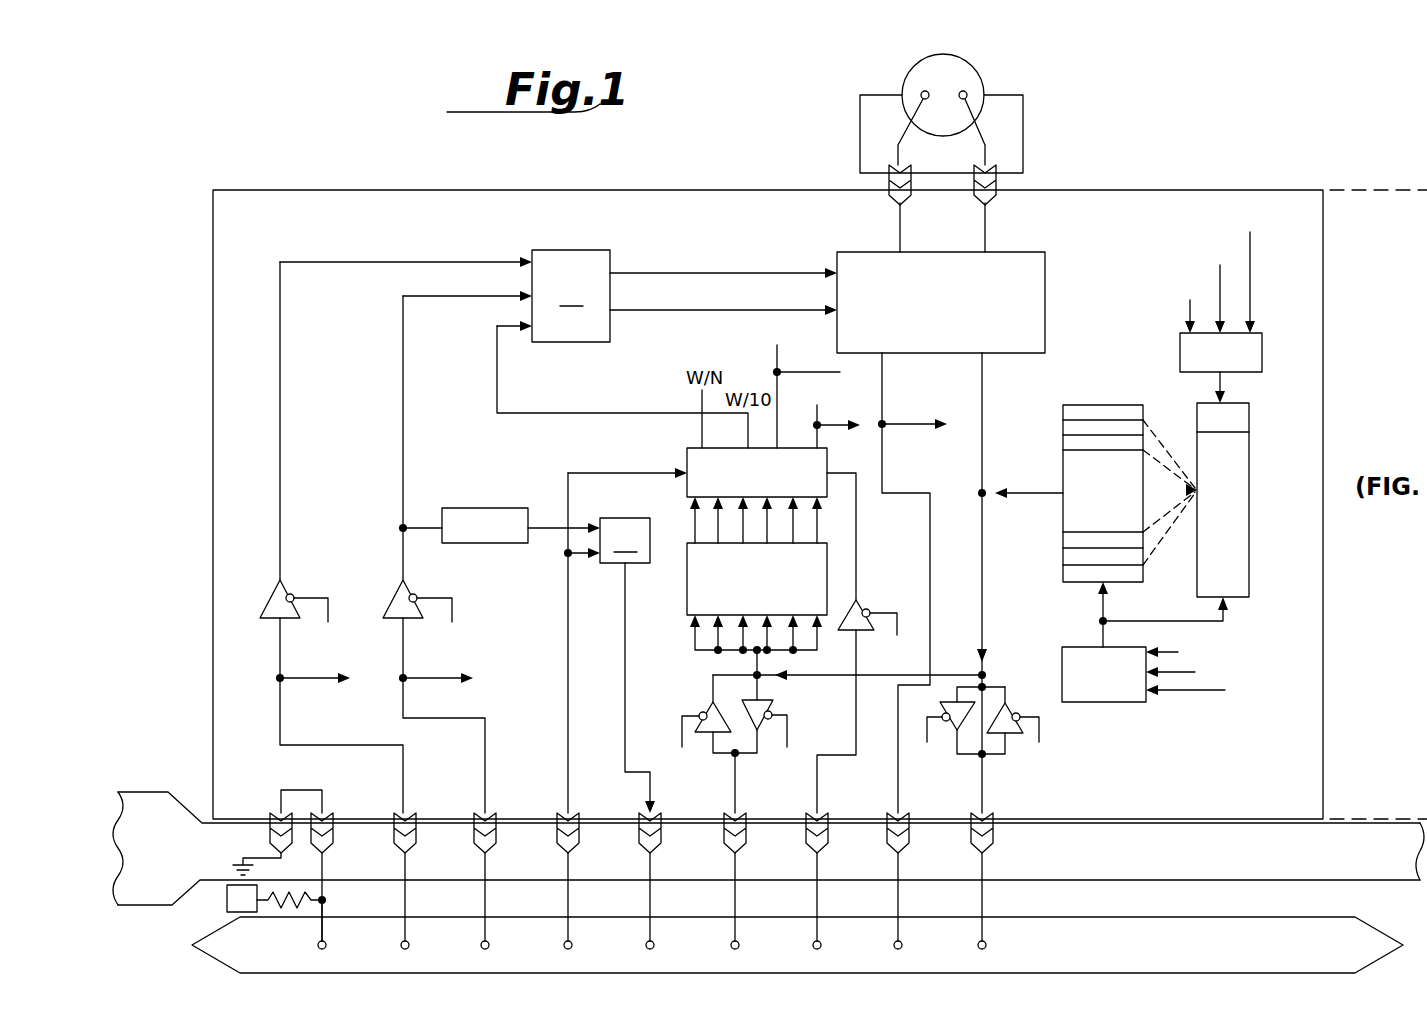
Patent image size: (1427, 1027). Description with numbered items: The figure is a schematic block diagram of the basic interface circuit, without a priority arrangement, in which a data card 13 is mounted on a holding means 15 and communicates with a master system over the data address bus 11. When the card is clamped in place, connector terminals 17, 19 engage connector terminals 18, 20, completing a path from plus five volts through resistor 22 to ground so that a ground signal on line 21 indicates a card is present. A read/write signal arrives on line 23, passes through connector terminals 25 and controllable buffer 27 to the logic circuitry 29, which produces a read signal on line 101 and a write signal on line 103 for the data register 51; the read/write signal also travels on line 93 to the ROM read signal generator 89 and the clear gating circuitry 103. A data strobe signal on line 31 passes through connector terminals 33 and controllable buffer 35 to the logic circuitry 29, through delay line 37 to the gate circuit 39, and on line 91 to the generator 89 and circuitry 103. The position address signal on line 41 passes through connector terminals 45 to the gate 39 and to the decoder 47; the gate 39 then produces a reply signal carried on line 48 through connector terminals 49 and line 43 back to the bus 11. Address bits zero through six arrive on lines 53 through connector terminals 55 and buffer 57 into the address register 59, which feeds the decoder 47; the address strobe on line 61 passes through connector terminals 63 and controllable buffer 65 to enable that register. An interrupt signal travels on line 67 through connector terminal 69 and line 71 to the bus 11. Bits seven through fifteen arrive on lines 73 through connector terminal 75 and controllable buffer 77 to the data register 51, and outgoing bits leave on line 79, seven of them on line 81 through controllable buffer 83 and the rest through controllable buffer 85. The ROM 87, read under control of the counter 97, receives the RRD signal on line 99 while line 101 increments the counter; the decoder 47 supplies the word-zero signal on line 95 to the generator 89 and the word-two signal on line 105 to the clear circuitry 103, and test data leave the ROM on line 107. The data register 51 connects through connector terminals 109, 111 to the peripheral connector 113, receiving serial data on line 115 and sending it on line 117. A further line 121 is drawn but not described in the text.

The data address bus 11 is at (1350, 940).
The data card 13 is at (470, 210).
The holding means 15 is at (166, 851).
The connector terminal 17 is at (276, 810).
The connector terminal 18 is at (270, 842).
The connector terminal 19 is at (330, 810).
The connector terminal 20 is at (334, 843).
The line 21 is at (318, 938).
The resistor 22 is at (278, 905).
The line 23 is at (408, 870).
The connector terminals 25 is at (412, 812).
The controllable buffer 27 is at (287, 592).
The logic circuitry 29 is at (514, 408).
The line 31 is at (488, 870).
The connector terminals 33 is at (492, 812).
The controllable buffer 35 is at (400, 592).
The delay line 37 is at (518, 508).
The gate circuit 39 is at (607, 643).
The line 41 is at (571, 870).
The line 43 is at (653, 870).
The connector terminals 45 is at (574, 812).
The decoder 47 is at (690, 465).
The line 48 is at (625, 663).
The connector terminals 49 is at (660, 812).
The data register 51 is at (1035, 300).
The lines 53 is at (738, 870).
The connector terminals 55 is at (744, 812).
The buffer 57 is at (705, 707).
The address register 59 is at (700, 573).
The line 61 is at (820, 870).
The connector terminals 63 is at (826, 812).
The controllable buffer 65 is at (860, 603).
The line 67 is at (888, 480).
The connector terminal 69 is at (906, 812).
The line 71 is at (901, 870).
The lines 73 is at (985, 870).
The connector terminal 75 is at (990, 812).
The controllable buffer 77 is at (1010, 710).
The line 79 is at (985, 406).
The line 81 is at (877, 680).
The controllable buffer 83 is at (778, 700).
The controllable buffer 85 is at (944, 713).
The ROM 87 is at (1073, 472).
The ROM read signal generator 89 is at (1135, 695).
The line 91 is at (430, 682).
The line 93 is at (322, 690).
The line 95 is at (838, 420).
The counter 97 is at (1240, 500).
The line 99 is at (1100, 614).
The line 101 is at (715, 273).
The gating circuitry 103 is at (690, 312).
The line 105 is at (822, 358).
The line 107 is at (1040, 505).
The connector terminals 109 is at (1000, 180).
The connector terminals 111 is at (888, 180).
The peripheral connector 113 is at (968, 78).
The line 115 is at (898, 231).
The line 117 is at (988, 231).
The line 121 is at (915, 422).